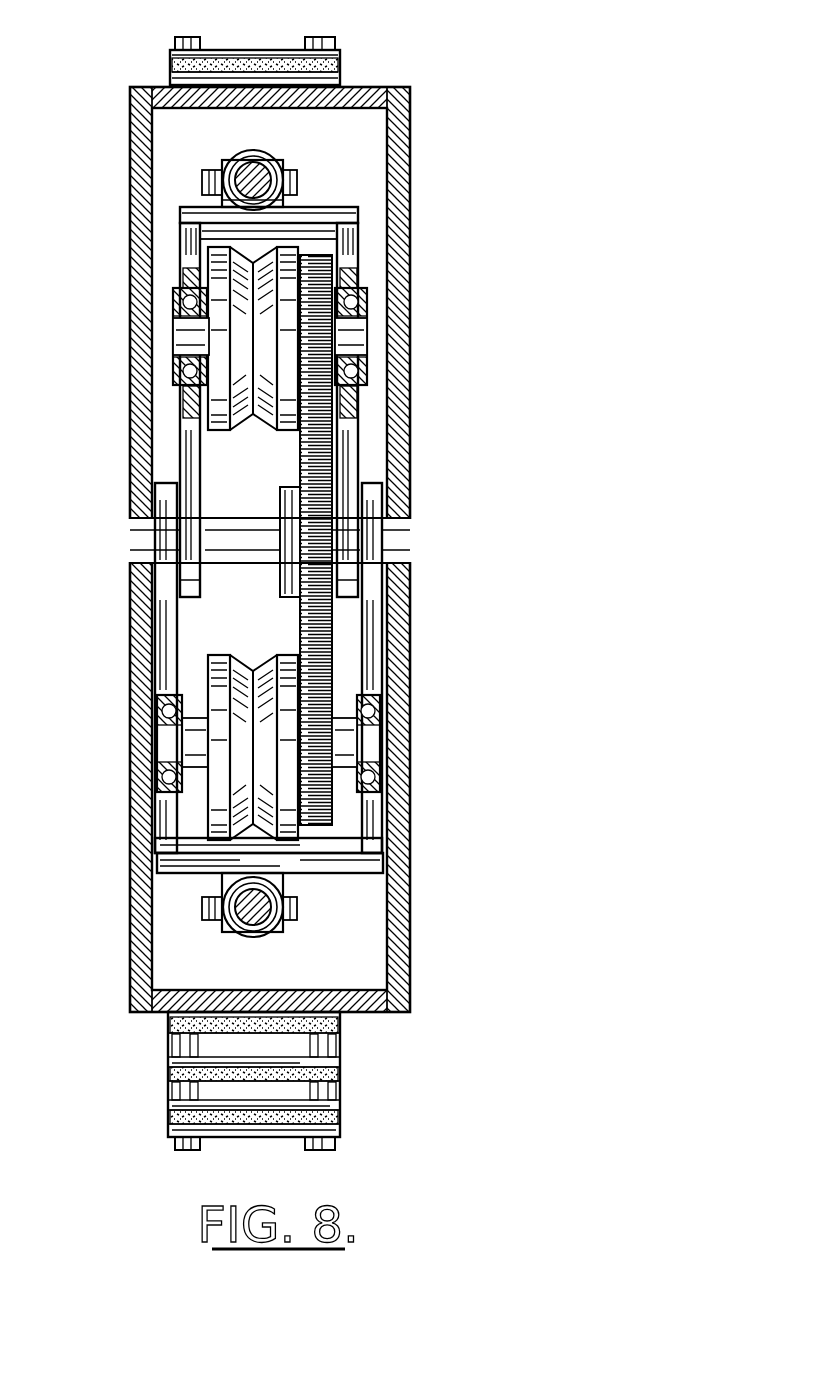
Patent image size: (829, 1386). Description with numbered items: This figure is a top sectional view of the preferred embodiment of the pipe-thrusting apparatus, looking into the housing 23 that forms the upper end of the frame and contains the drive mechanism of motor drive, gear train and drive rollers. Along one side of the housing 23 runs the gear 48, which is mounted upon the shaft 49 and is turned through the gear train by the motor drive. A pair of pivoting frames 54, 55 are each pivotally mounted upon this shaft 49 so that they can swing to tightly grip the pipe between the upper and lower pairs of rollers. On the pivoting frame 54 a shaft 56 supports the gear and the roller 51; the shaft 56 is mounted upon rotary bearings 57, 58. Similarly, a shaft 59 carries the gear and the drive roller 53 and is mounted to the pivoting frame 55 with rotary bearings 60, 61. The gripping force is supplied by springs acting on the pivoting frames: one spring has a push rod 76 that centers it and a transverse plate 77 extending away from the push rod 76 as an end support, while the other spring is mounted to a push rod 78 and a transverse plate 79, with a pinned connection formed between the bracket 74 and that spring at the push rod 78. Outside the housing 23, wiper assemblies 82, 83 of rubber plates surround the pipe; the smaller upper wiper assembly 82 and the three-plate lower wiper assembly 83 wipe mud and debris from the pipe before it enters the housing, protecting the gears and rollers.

The housing 23 is at (131, 146).
The gear 48 is at (300, 446).
The shaft 49 is at (228, 548).
The roller 51 is at (215, 280).
The drive roller 53 is at (210, 797).
The pivoting frame 54 is at (357, 245).
The pivoting frame 55 is at (165, 630).
The shaft 56 is at (186, 332).
The rotary bearing 57 is at (178, 303).
The rotary bearing 58 is at (362, 305).
The shaft 59 is at (195, 735).
The rotary bearing 60 is at (160, 706).
The rotary bearing 61 is at (378, 718).
The bracket 74 is at (283, 200).
The push rod 76 is at (253, 180).
The transverse plate 77 is at (240, 160).
The push rod 78 is at (255, 912).
The transverse plate 79 is at (268, 934).
The wiper assembly 82 is at (341, 68).
The lower wiper assembly 83 is at (342, 1106).